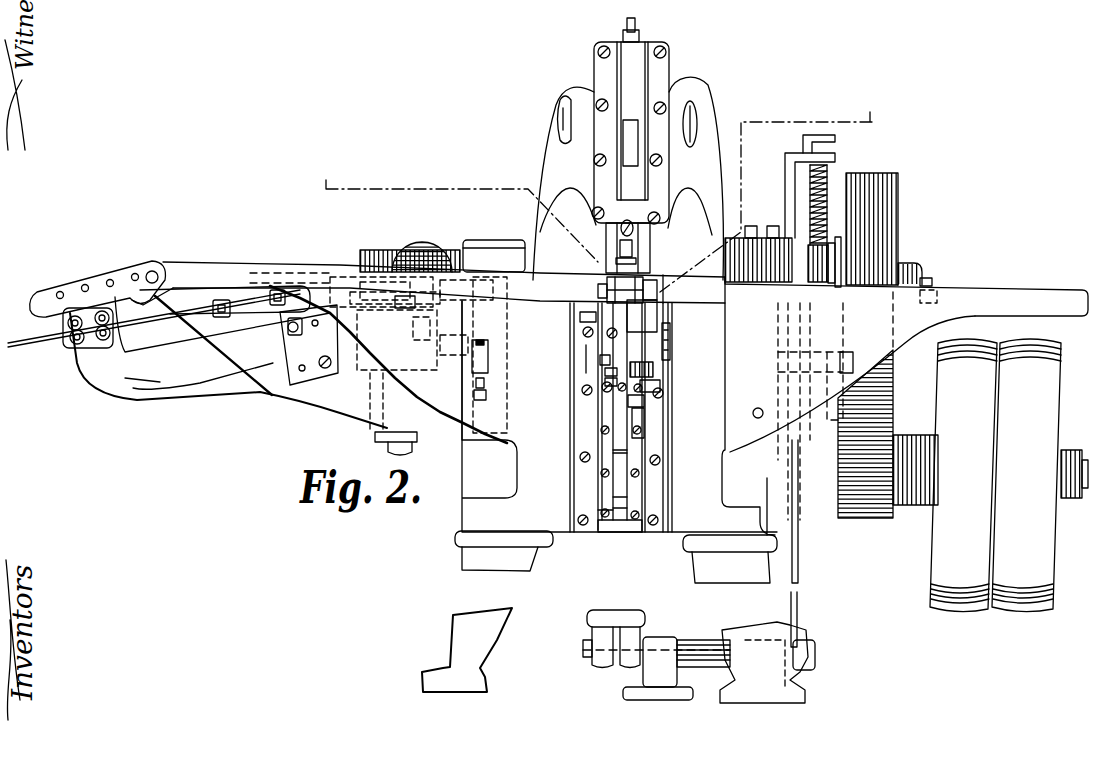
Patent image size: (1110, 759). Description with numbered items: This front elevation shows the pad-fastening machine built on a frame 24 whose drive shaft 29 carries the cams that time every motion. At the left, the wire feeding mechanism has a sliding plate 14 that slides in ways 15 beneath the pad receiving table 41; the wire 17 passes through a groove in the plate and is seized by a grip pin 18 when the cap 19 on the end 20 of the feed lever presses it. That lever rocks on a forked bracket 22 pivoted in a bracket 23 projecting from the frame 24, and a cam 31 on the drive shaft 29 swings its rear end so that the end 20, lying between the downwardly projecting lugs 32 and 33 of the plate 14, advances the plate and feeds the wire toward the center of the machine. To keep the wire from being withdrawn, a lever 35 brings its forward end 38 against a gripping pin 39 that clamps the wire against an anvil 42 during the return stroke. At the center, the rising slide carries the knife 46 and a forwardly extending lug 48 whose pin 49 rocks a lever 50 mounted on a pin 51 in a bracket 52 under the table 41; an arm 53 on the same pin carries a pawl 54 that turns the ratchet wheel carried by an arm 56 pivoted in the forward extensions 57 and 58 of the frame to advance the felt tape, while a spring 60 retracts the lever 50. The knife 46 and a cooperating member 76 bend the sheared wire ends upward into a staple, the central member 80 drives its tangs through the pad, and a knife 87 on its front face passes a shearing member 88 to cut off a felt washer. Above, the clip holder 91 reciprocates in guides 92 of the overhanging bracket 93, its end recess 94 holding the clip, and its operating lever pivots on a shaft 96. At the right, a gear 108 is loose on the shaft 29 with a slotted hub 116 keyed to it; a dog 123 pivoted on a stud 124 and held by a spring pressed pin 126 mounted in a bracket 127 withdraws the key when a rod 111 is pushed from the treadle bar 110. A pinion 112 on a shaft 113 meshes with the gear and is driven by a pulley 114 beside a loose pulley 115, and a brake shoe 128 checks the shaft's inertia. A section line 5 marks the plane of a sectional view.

The section line 5 is at (598, 191).
The sliding plate 14 is at (365, 284).
The ways 15 is at (342, 283).
The wire 17 is at (22, 345).
The grip pin 18 is at (395, 258).
The cap 19 is at (420, 300).
The end of lever 20 is at (387, 323).
The forked bracket 22 is at (367, 315).
The bracket 23 is at (375, 434).
The frame 24 is at (480, 462).
The drive shaft 29 is at (935, 300).
The cam 31 is at (422, 242).
The lug 32 is at (325, 363).
The lug 33 is at (445, 369).
The lever 35 is at (477, 400).
The forward end of lever 38 is at (490, 358).
The gripping pin 39 is at (470, 307).
The pad receiving table 41 is at (248, 264).
The anvil 42 is at (488, 282).
The knife 46 is at (596, 322).
The lug 48 is at (646, 405).
The pin 49 is at (655, 374).
The lever 50 is at (660, 392).
The pin 51 is at (670, 332).
The bracket 52 is at (657, 315).
The arm 53 is at (601, 367).
The pawl 54 is at (586, 372).
The arm 56 is at (672, 300).
The forward extension of frame 57 is at (603, 284).
The forward extension of frame 58 is at (656, 288).
The spring 60 is at (670, 348).
The cooperating member 76 is at (655, 362).
The central member 80 is at (649, 426).
The knife 87 is at (605, 380).
The shearing member 88 is at (607, 292).
The clip holder 91 is at (632, 222).
The guides 92 is at (606, 63).
The overhanging bracket 93 is at (560, 120).
The recess 94 is at (614, 258).
The shaft 96 is at (697, 120).
The gear 108 is at (882, 185).
The treadle bar 110 is at (618, 614).
The rod 111 is at (798, 552).
The pinion 112 is at (852, 520).
The shaft 113 is at (1086, 500).
The pulley 114 is at (935, 612).
The roller 115 is at (1038, 612).
The hub 116 is at (908, 270).
The dog 123 is at (790, 272).
The stud 124 is at (806, 284).
The spring pressed pin 126 is at (810, 190).
The bracket 127 is at (835, 157).
The brake shoe 128 is at (842, 252).